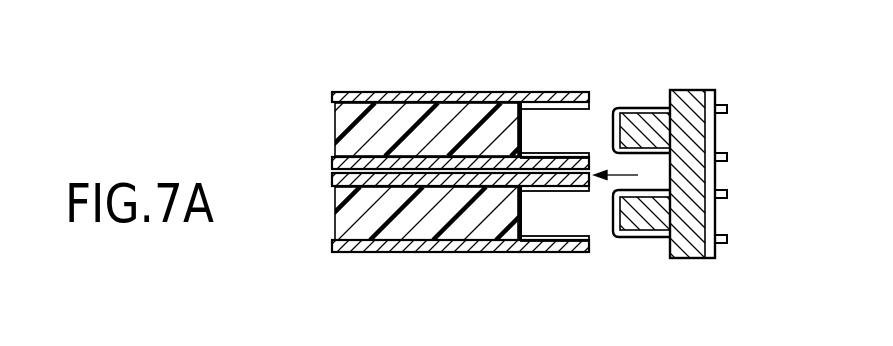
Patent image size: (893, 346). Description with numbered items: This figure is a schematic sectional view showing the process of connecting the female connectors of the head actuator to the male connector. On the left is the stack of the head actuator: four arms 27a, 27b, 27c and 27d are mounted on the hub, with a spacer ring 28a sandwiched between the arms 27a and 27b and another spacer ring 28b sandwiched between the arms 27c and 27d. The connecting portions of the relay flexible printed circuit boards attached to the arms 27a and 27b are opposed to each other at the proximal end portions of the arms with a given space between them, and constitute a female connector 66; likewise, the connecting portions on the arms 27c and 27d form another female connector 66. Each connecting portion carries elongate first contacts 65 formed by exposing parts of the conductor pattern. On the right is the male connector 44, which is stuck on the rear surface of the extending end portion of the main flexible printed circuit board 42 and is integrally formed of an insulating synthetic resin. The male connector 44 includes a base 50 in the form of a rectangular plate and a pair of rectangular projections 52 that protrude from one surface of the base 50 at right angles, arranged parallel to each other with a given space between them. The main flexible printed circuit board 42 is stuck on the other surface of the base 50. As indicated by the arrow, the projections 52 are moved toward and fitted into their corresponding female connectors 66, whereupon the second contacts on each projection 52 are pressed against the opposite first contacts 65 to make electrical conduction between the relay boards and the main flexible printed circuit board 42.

The arm 27a is at (428, 93).
The arm 27b is at (333, 165).
The arm 27c is at (333, 182).
The arm 27d is at (435, 254).
The spacer ring 28a is at (365, 108).
The spacer ring 28b is at (368, 228).
The first contact 65 is at (577, 156).
The female connector 66 is at (535, 113).
The male connector 44 is at (707, 166).
The base 50 is at (689, 89).
The projection 52 is at (640, 115).
The main flexible printed circuit board 42 is at (717, 177).